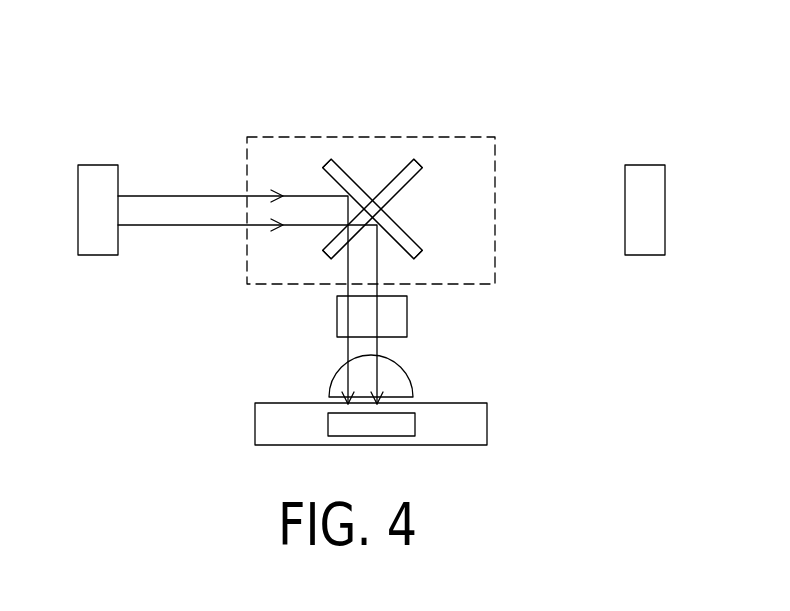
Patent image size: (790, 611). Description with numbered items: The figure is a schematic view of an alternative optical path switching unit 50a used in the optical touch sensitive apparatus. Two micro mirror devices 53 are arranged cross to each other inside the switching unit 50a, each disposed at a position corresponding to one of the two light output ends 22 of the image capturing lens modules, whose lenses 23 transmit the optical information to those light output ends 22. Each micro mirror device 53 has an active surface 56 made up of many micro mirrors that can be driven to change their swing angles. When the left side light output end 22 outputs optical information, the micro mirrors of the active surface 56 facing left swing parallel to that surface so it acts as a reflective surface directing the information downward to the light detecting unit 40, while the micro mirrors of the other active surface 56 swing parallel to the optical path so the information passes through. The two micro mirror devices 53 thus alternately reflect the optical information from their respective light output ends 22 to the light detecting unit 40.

The optical path switching unit 50a is at (368, 108).
The lenses 23 is at (100, 165).
The light output ends 22 is at (132, 184).
The micro mirror devices 53 is at (330, 163).
The active surface 56 is at (413, 178).
The light detecting unit 40 is at (487, 423).